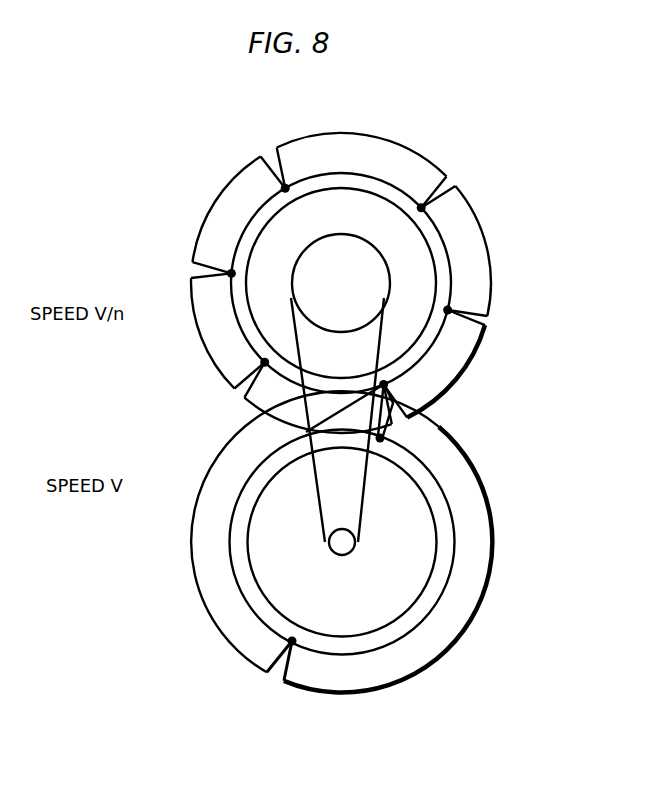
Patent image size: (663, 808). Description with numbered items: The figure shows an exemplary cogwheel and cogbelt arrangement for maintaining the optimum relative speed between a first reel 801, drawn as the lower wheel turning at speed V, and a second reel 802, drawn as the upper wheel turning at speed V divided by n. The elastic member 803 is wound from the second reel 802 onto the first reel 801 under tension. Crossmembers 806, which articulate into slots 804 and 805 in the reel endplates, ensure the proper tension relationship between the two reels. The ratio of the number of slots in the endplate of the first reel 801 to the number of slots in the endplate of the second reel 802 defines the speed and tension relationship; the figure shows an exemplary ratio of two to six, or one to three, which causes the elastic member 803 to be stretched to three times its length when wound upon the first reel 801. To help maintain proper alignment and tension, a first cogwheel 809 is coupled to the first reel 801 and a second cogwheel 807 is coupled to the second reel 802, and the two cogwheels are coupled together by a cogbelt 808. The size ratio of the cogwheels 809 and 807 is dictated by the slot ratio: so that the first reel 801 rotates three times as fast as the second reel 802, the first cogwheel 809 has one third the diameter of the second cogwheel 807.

The first reel 801 is at (193, 548).
The second reel 802 is at (208, 217).
The elastic member 803 is at (457, 547).
The slots 804 is at (461, 318).
The slots 805 is at (280, 673).
The crossmembers 806 is at (284, 186).
The second cogwheel 807 is at (333, 233).
The cogbelt 808 is at (384, 341).
The first cogwheel 809 is at (346, 556).